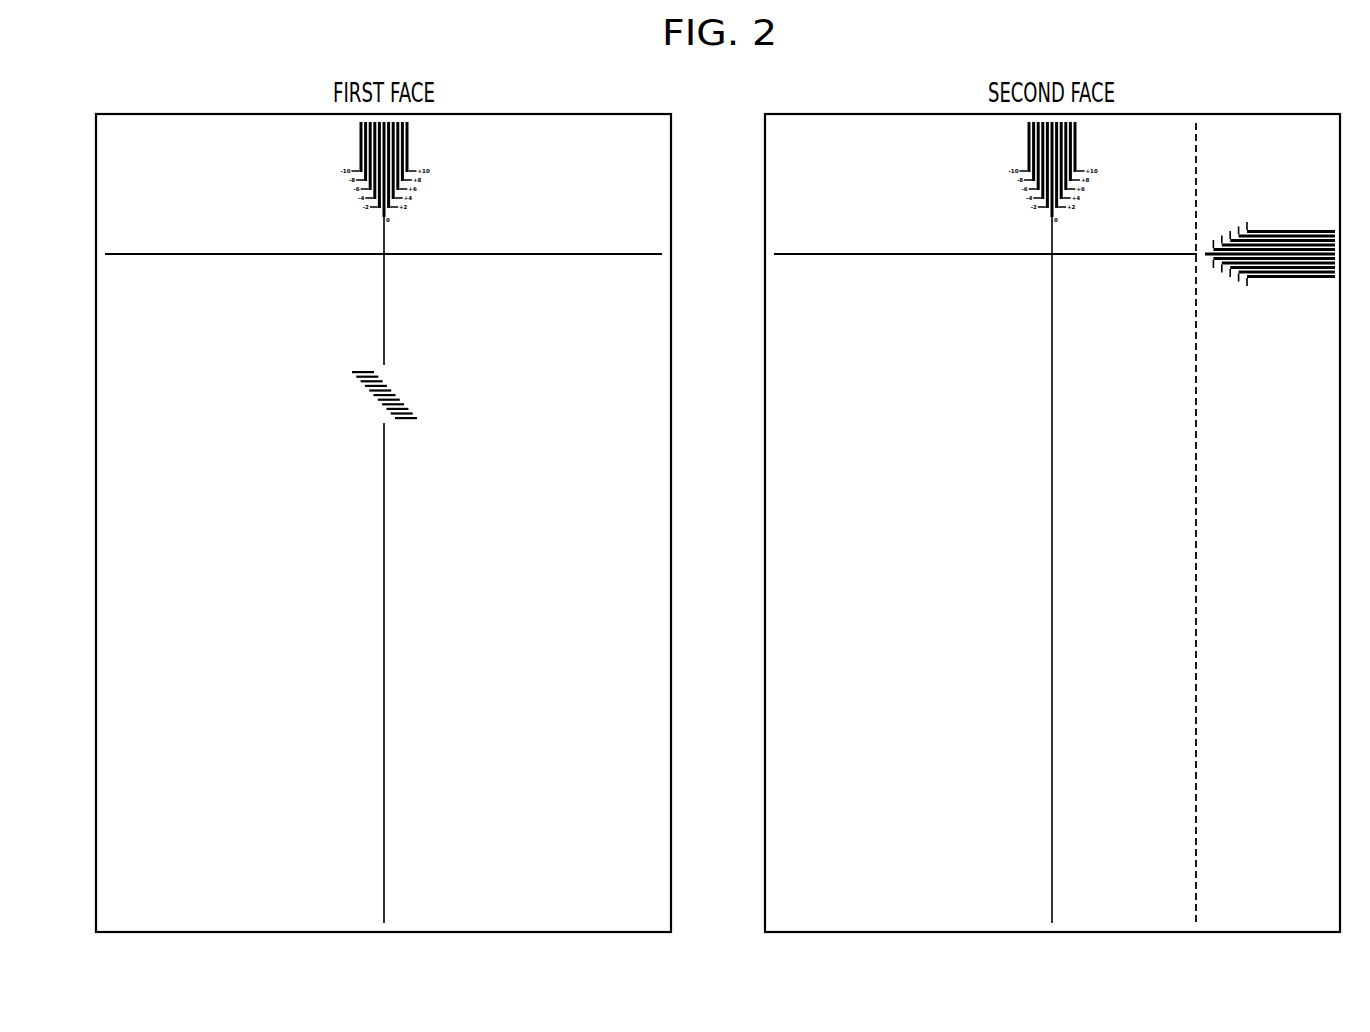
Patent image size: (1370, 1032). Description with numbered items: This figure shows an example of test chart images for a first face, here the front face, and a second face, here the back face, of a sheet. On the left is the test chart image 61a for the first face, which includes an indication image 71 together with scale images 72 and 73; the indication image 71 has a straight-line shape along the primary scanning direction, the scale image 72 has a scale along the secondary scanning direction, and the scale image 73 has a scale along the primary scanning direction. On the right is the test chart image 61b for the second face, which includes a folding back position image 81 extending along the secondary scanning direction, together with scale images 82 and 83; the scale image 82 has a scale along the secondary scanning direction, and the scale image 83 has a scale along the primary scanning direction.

The test chart image for the first face 61a is at (627, 113).
The test chart image for the second face 61b is at (1310, 100).
The indication image 71 is at (597, 249).
The scale image 72 is at (412, 384).
The scale image 73 is at (433, 154).
The folding back position image 81 is at (1201, 177).
The scale image 82 is at (1281, 220).
The scale image 83 is at (1013, 156).